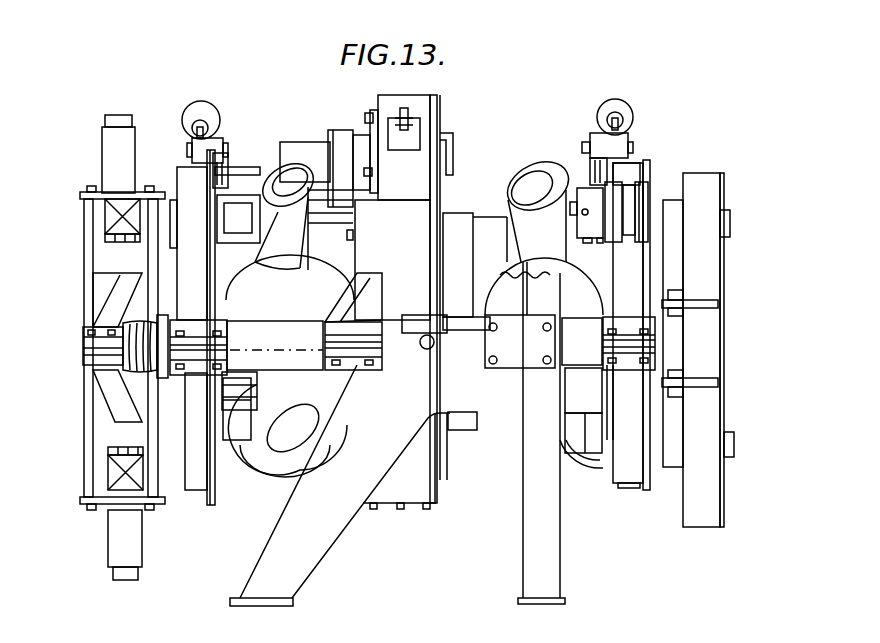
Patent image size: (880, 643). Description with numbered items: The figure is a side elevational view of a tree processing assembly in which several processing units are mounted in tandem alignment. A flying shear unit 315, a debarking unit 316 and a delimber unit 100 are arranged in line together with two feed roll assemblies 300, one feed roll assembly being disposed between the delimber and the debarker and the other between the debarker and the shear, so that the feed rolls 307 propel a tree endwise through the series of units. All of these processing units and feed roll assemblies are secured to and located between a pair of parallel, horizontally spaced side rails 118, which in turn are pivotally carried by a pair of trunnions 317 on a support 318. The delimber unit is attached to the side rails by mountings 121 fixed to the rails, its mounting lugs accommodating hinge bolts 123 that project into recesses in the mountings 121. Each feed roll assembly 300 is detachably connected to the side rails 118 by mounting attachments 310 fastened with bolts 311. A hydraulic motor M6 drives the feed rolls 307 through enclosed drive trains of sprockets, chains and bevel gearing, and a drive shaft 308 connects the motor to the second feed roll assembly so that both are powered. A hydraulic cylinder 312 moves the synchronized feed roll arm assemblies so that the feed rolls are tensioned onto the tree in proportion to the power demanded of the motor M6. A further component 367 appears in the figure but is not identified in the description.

The delimber unit 100 is at (716, 173).
The side rails 118 is at (297, 338).
The mountings 121 is at (677, 350).
The hinge bolts 123 is at (672, 294).
The feed roll assembly 300 is at (188, 168).
The feed rolls 307 is at (330, 268).
The drive shaft 308 is at (489, 215).
The mounting attachments 310 is at (190, 375).
The bolts 311 is at (220, 322).
The hydraulic cylinder 312 is at (201, 112).
The flying shear unit 315 is at (120, 582).
The debarking unit 316 is at (392, 503).
The trunnions 317 is at (428, 349).
The support 318 is at (520, 552).
The roller 367 is at (513, 450).
The hydraulic motor M6 is at (587, 197).